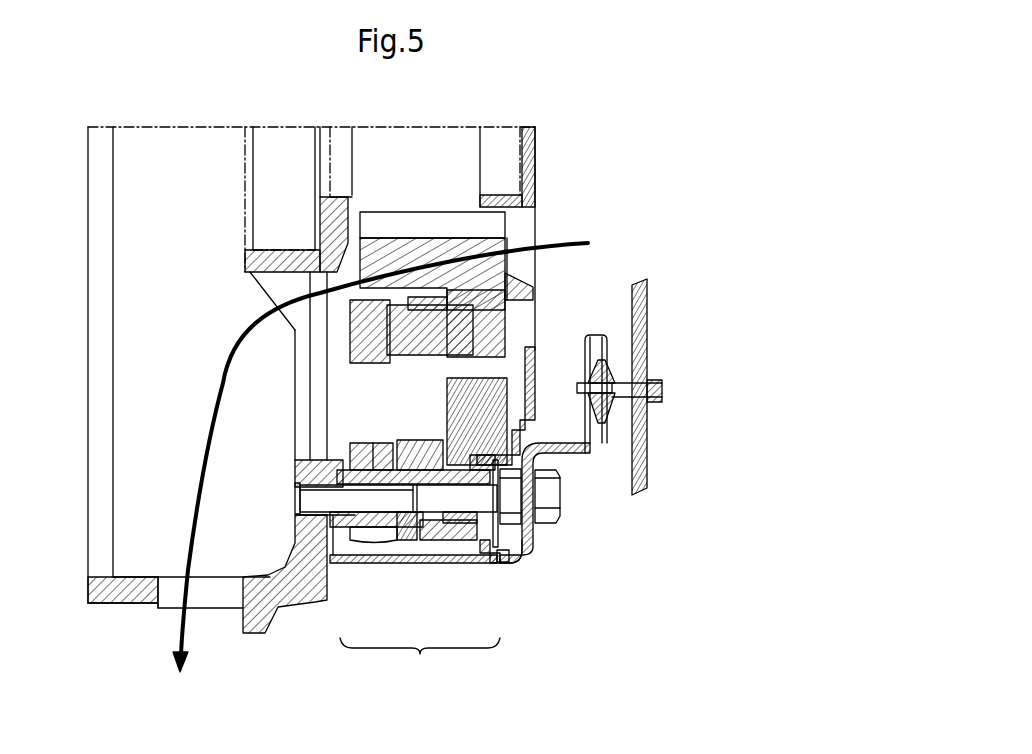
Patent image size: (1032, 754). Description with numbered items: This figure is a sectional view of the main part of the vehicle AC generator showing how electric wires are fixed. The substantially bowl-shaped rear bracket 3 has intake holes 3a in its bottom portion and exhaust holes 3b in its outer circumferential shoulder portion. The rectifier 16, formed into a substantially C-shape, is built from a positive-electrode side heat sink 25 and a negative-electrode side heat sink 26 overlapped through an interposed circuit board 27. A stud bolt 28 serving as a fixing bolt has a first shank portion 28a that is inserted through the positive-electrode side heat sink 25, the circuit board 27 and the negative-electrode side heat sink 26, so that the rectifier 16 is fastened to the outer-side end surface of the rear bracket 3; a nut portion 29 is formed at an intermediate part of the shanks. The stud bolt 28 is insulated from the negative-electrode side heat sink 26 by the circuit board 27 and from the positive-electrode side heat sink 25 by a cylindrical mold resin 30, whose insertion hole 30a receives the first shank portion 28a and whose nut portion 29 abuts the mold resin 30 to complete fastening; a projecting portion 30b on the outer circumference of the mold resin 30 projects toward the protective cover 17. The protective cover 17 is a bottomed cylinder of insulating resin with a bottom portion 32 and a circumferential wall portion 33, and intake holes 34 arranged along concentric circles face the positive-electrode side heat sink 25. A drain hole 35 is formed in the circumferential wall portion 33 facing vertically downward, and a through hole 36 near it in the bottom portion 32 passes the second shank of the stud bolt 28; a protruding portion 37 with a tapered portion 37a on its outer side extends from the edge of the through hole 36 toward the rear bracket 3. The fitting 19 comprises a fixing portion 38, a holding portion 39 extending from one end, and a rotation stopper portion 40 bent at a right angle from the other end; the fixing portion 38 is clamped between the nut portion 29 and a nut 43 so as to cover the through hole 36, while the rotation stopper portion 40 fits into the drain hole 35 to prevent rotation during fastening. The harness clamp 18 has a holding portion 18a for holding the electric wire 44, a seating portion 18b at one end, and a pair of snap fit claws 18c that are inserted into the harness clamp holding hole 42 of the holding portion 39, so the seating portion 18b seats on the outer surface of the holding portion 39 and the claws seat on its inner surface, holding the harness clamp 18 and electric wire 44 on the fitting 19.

The rear bracket 3 is at (120, 606).
The intake holes 3a is at (310, 400).
The exhaust holes 3b is at (212, 608).
The rectifier 16 is at (440, 695).
The protective cover 17 is at (535, 152).
The harness clamp 18 is at (663, 397).
The holding portion 18a is at (650, 420).
The seating portion 18b is at (613, 362).
The snap fit claws 18c is at (607, 342).
The fitting 19 is at (575, 460).
The positive-electrode side heat sink 25 is at (443, 555).
The negative-electrode side heat sink 26 is at (377, 543).
The circuit board 27 is at (400, 540).
The stud bolt 28 is at (313, 502).
The first shank portion 28a is at (297, 622).
The nut portion 29 is at (513, 510).
The mold resin 30 is at (483, 467).
The insertion hole 30a is at (470, 490).
The projecting portion 30b is at (510, 560).
The bottom portion 32 is at (537, 183).
The circumferential wall portion 33 is at (320, 590).
The intake holes 34 is at (527, 228).
The drain hole 35 is at (497, 562).
The through hole 36 is at (530, 558).
The protruding portion 37 is at (510, 457).
The tapered portion 37a is at (483, 488).
The fixing portion 38 is at (530, 540).
The holding portion 39 is at (595, 368).
The rotation stopper portion 40 is at (512, 557).
The harness clamp holding hole 42 is at (663, 417).
The nut 43 is at (555, 520).
The electric wire 44 is at (650, 287).